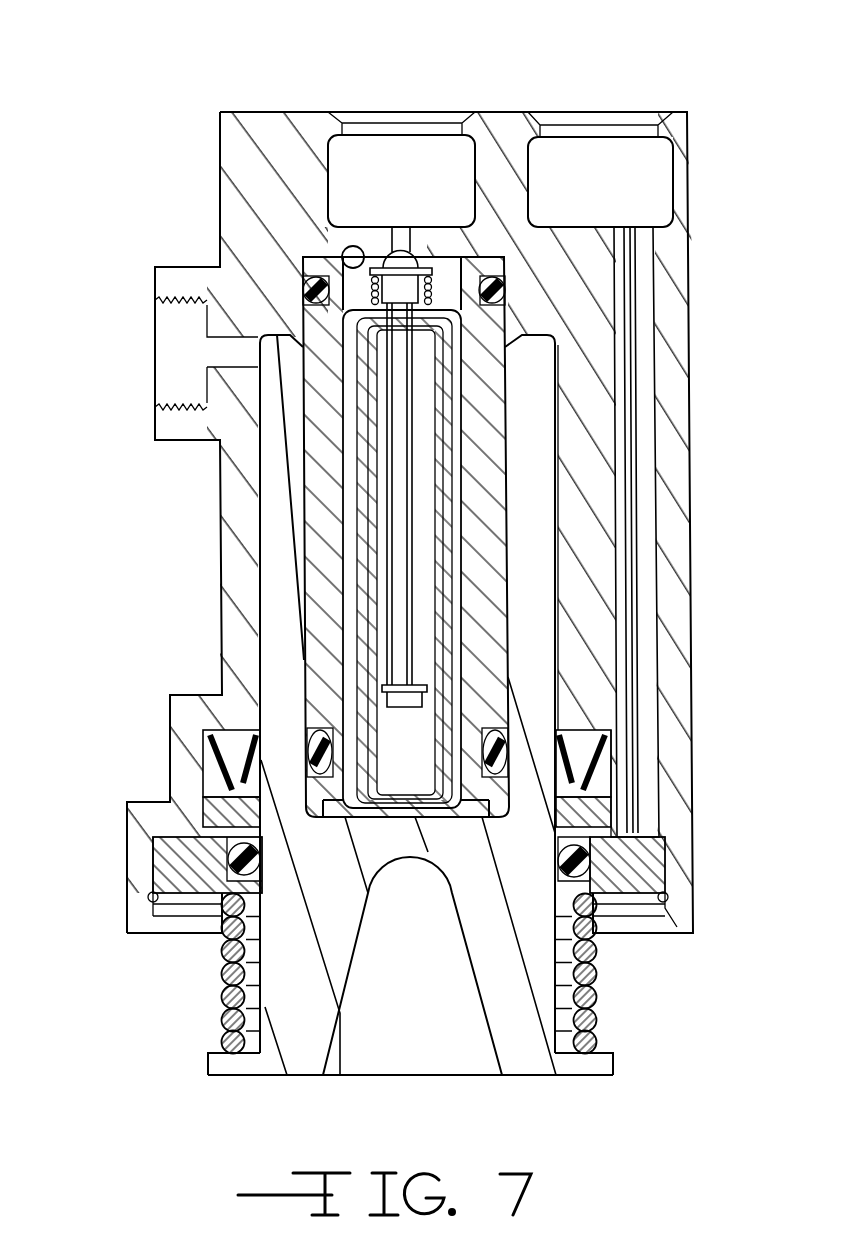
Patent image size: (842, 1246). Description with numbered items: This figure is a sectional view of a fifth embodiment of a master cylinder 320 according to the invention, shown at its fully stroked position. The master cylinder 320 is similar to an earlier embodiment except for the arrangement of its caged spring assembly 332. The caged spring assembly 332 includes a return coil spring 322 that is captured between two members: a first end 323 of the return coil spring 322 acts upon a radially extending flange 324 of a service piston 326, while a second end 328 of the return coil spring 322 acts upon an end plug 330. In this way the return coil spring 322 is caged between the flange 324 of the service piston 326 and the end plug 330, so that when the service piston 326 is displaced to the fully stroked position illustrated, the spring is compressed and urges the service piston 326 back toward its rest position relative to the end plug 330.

The master cylinder 320 is at (568, 70).
The return coil spring 322 is at (598, 973).
The first end 323 is at (592, 1053).
The radially extending flange 324 is at (208, 1060).
The service piston 326 is at (293, 1050).
The second end 328 is at (639, 880).
The end plug 330 is at (185, 893).
The caged spring assembly 332 is at (465, 545).